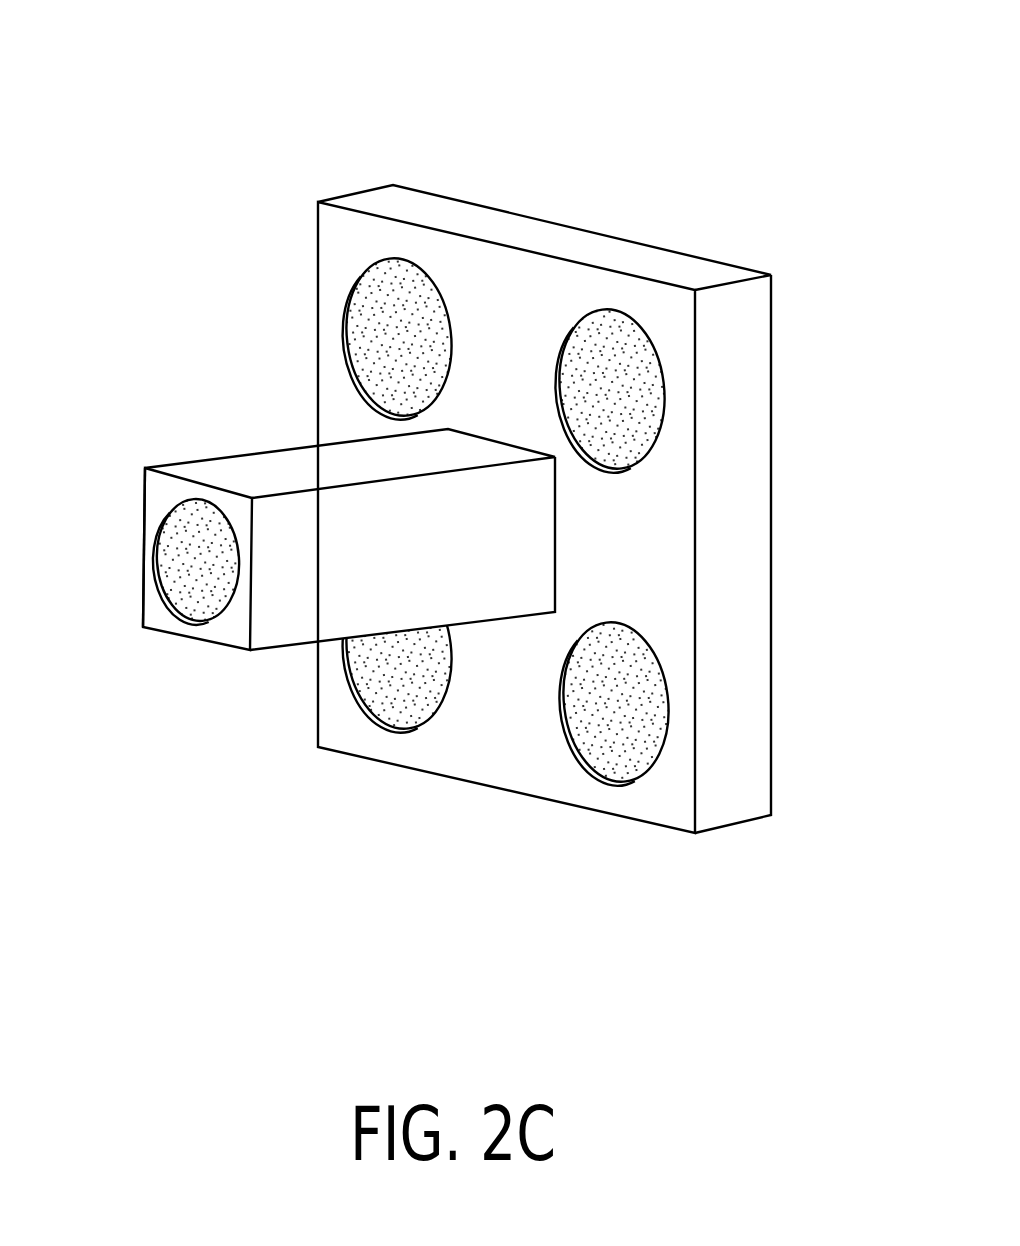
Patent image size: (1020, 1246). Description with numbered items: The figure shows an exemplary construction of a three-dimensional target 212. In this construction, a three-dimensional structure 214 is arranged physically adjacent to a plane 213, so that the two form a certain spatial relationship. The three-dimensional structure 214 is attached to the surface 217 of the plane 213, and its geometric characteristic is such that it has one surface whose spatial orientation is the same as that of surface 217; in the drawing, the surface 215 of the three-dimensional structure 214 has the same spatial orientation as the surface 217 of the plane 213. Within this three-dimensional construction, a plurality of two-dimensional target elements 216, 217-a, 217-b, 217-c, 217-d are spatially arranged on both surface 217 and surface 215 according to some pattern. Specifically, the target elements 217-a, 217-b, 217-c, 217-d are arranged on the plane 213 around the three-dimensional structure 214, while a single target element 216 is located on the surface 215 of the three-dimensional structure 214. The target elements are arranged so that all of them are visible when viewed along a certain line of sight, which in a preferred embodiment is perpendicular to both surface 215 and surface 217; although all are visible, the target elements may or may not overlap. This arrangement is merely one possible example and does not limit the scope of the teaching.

The three-dimensional target 212 is at (575, 90).
The plane 213 is at (747, 562).
The three-dimensional structure 214 is at (272, 637).
The surface 215 is at (155, 496).
The two-dimensional target element 216 is at (168, 563).
The surface 217 is at (509, 504).
The two-dimensional target element 217-a is at (400, 265).
The two-dimensional target element 217-b is at (612, 323).
The two-dimensional target element 217-c is at (392, 703).
The two-dimensional target element 217-d is at (622, 763).